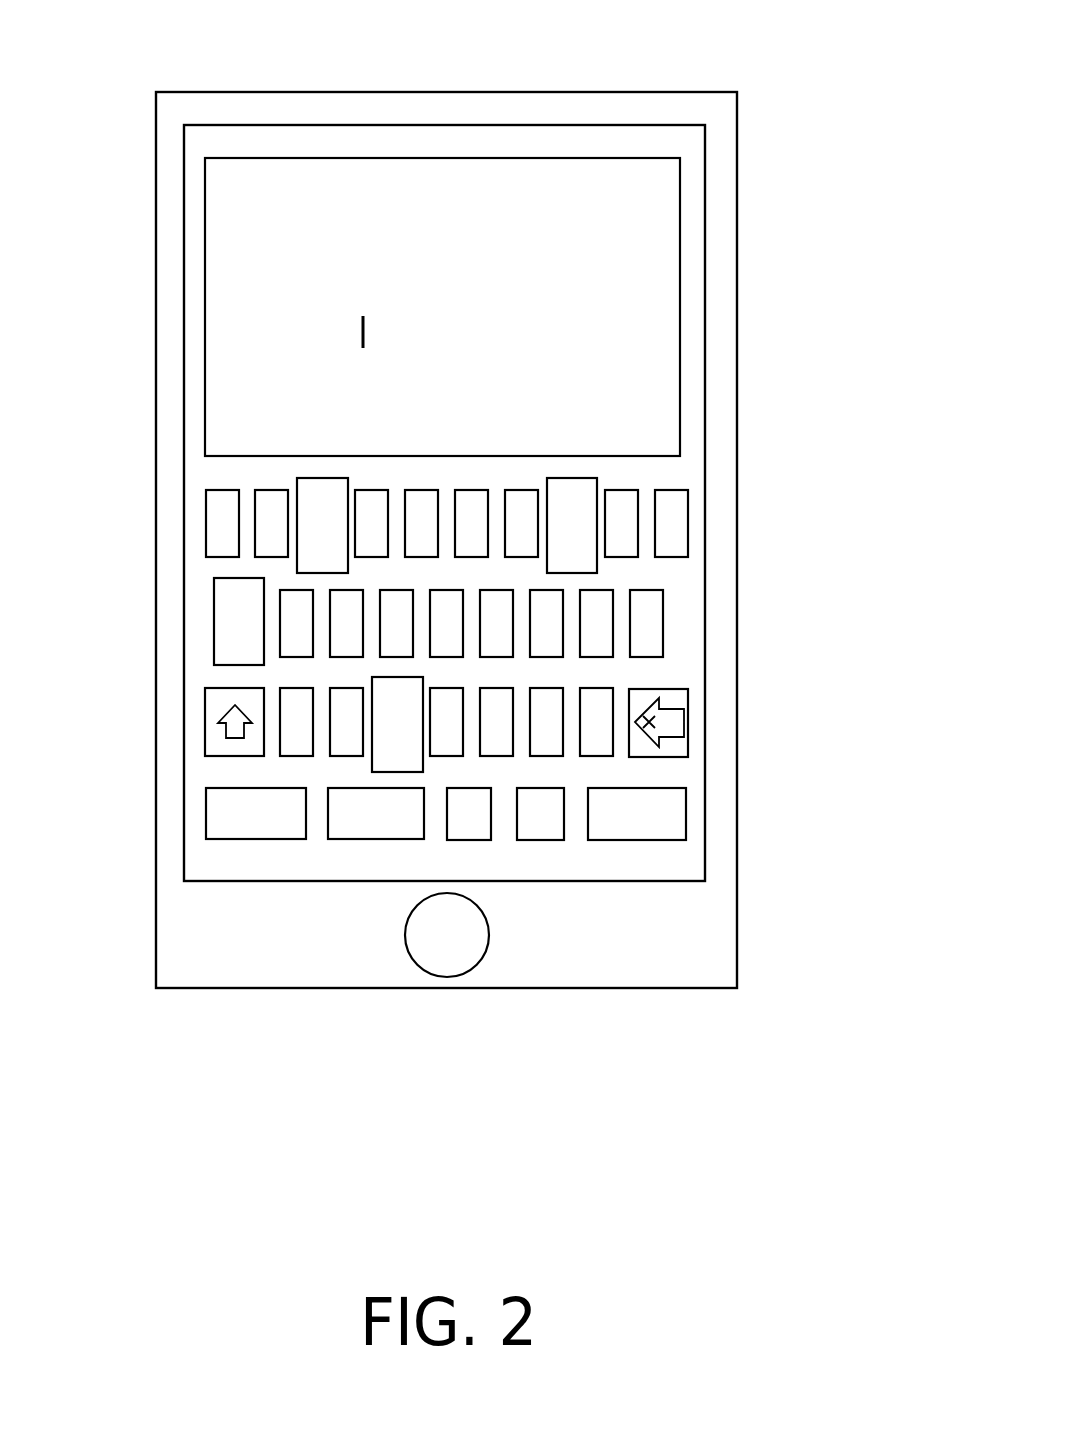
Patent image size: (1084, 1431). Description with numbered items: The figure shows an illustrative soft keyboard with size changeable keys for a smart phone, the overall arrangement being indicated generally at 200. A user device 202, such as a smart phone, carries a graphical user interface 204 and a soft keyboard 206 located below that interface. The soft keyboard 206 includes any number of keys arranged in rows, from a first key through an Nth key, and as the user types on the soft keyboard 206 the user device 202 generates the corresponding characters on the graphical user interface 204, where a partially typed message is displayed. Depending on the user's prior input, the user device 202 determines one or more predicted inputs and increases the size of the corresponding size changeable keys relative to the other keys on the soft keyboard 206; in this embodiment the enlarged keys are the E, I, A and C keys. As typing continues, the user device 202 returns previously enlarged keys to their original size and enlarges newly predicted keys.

The mobile computing device 200 is at (738, 37).
The user device 202 is at (737, 114).
The graphical user interface 204 is at (680, 198).
The soft keyboard 206 is at (454, 672).